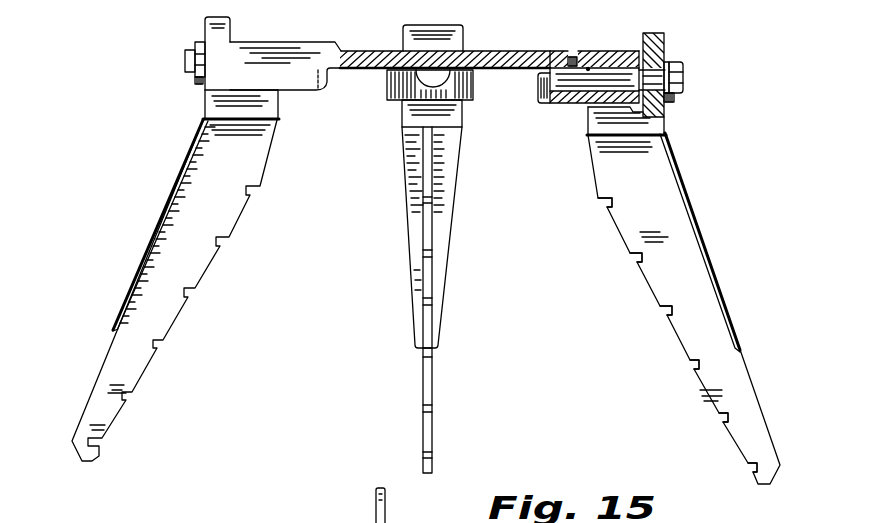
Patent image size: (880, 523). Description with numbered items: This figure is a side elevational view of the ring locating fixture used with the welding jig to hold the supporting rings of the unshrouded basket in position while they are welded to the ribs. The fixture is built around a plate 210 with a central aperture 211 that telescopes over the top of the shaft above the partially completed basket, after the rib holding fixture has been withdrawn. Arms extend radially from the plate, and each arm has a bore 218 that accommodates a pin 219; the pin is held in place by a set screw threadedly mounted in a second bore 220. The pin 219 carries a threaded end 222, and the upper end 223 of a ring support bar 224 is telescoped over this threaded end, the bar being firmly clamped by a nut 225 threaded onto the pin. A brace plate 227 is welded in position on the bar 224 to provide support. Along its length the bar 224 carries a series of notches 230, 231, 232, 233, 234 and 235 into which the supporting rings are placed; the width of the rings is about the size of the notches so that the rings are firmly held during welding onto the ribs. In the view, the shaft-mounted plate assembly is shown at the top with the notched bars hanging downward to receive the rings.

The plate 210 is at (348, 46).
The aperture 211 is at (408, 50).
The bore 218 is at (588, 67).
The pin 219 is at (610, 80).
The bore 220 is at (571, 55).
The threaded end 222 is at (686, 80).
The upper end 223 is at (666, 44).
The ring support bar 224 is at (736, 395).
The nut 225 is at (672, 102).
The brace plate 227 is at (714, 276).
The notch 230 is at (750, 468).
The notch 231 is at (722, 418).
The notch 232 is at (693, 365).
The notch 233 is at (665, 311).
The notch 234 is at (636, 258).
The notch 235 is at (606, 203).